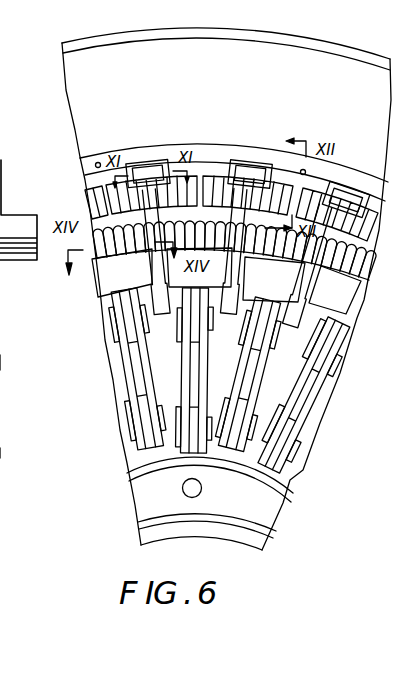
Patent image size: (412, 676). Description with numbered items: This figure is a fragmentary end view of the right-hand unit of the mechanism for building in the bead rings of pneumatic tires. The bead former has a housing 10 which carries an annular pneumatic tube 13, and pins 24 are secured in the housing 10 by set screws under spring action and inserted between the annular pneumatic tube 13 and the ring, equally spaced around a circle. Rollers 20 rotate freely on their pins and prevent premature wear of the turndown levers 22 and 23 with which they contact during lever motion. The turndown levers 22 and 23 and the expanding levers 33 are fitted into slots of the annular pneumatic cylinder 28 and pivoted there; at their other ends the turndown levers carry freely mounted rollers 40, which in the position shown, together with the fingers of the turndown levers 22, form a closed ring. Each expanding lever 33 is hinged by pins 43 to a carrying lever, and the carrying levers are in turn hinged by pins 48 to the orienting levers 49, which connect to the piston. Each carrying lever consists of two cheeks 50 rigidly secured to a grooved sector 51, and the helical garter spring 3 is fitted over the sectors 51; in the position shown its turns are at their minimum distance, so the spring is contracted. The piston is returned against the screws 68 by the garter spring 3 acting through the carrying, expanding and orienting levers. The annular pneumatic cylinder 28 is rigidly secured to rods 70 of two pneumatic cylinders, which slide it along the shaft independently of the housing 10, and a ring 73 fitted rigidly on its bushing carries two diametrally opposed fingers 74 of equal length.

The helical garter spring 3 is at (365, 292).
The housing 10 is at (358, 60).
The annular pneumatic tube 13 is at (72, 69).
The rollers 20 is at (143, 164).
The turndown levers 22 is at (157, 186).
The turndown levers 23 is at (251, 168).
The pins 24 is at (98, 162).
The annular pneumatic cylinder 28 is at (0, 452).
The expanding levers 33 is at (323, 357).
The rollers 40 is at (110, 200).
The pins 43 is at (338, 357).
The pins 48 is at (288, 450).
The orienting levers 49 is at (288, 437).
The cheeks 50 is at (148, 367).
The sector 51 is at (100, 283).
The screws 68 is at (0, 362).
The rods 70 is at (20, 225).
The ring 73 is at (133, 483).
The fingers 74 is at (201, 489).